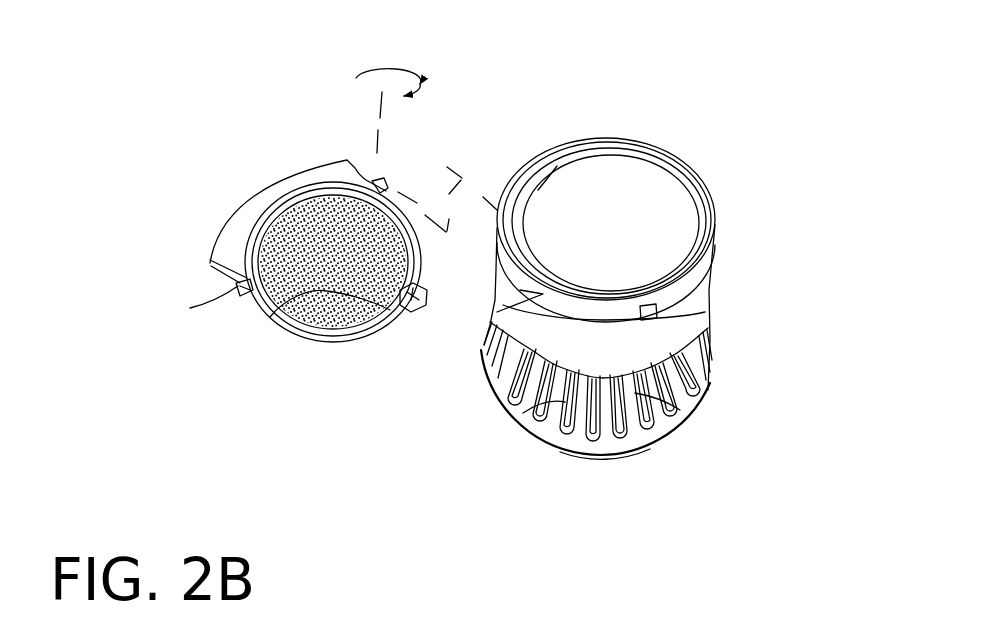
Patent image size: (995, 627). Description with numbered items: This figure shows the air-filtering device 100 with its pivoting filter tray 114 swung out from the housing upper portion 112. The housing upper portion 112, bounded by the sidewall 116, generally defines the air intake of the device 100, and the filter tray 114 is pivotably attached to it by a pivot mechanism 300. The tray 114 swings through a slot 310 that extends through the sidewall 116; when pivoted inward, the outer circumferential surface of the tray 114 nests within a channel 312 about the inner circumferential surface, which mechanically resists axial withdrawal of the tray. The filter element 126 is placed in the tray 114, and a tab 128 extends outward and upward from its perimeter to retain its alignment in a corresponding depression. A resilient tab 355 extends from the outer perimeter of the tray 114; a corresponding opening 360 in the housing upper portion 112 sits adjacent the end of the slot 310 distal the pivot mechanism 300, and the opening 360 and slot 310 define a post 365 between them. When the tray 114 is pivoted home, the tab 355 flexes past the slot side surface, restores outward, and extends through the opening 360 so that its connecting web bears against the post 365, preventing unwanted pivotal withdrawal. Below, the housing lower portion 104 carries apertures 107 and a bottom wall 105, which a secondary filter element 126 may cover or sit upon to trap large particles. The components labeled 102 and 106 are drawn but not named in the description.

The device 100 is at (683, 111).
The tab 102 is at (714, 316).
The housing lower portion 104 is at (607, 464).
The bottom wall 105 is at (518, 425).
The base ring 106 is at (637, 437).
The apertures 107 is at (693, 410).
The housing upper portion 112 is at (585, 136).
The filter tray 114 is at (254, 172).
The sidewall 116 is at (703, 258).
The filter element 126 is at (300, 292).
The tab 128 is at (424, 308).
The pivot mechanism 300 is at (396, 174).
The slot 310 is at (497, 318).
The channel 312 is at (538, 190).
The tab 355 is at (237, 290).
The opening 360 is at (706, 316).
The post 365 is at (695, 354).